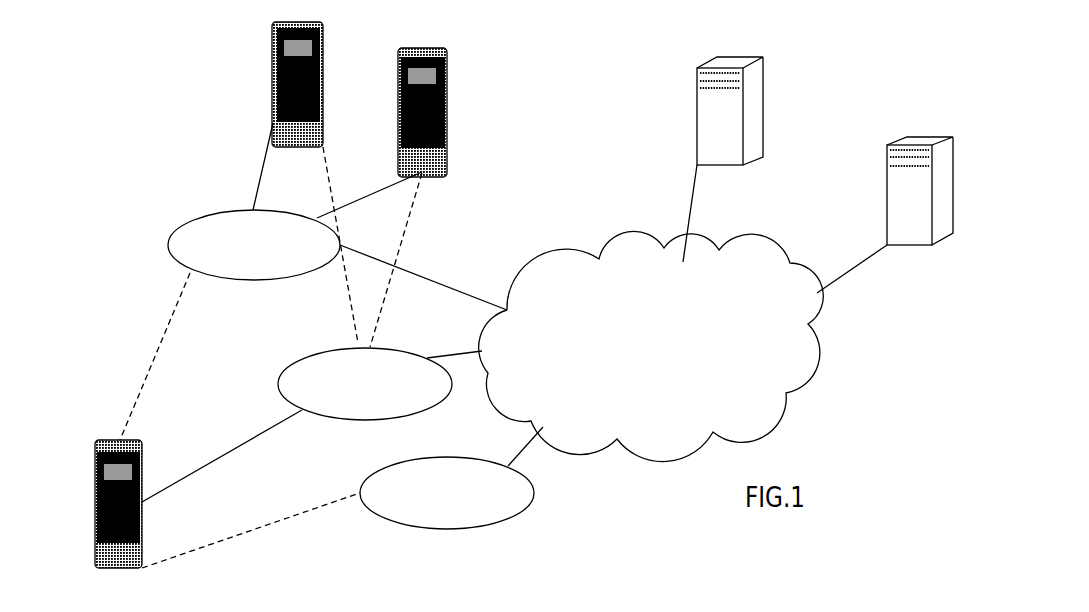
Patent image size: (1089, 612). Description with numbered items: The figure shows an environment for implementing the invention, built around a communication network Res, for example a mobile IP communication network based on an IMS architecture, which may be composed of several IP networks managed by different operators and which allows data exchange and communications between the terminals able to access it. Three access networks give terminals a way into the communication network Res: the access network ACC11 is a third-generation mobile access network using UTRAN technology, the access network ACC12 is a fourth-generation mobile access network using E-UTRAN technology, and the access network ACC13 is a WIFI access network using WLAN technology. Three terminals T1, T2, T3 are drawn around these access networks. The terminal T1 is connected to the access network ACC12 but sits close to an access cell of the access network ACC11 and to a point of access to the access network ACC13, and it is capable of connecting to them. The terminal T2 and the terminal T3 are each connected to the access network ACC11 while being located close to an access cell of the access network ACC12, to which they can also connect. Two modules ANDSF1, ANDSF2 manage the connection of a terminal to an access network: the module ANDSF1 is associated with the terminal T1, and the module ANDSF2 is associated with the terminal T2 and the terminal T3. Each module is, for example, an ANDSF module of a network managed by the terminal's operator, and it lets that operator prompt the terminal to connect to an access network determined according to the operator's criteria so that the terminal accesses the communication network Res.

The terminal T1 is at (126, 523).
The terminal T2 is at (422, 128).
The terminal T3 is at (297, 102).
The access network ACC11 is at (254, 245).
The access network ACC12 is at (365, 384).
The access network ACC13 is at (447, 493).
The communication network Res is at (651, 346).
The module for managing the connection of a terminal to an access network ANDSF1 is at (925, 213).
The module for managing the connection of a terminal to an access network ANDSF2 is at (750, 133).